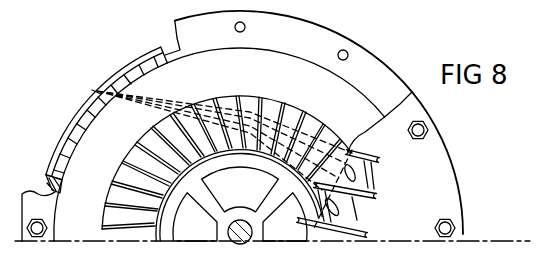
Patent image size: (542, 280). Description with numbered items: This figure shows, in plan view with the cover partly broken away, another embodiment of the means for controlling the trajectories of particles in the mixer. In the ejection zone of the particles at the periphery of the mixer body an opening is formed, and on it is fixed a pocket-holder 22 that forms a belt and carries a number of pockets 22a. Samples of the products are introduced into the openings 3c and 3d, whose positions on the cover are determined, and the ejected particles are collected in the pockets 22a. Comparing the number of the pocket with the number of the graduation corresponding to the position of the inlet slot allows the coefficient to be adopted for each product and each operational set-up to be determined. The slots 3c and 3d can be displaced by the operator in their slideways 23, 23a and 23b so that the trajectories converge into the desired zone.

The pocket-holder 22 is at (125, 67).
The pocket 22a is at (97, 91).
The opening 3d is at (379, 152).
The slideway 23b is at (378, 166).
The slideway 23 is at (376, 196).
The slideway 23a is at (368, 232).
The opening 3c is at (330, 226).